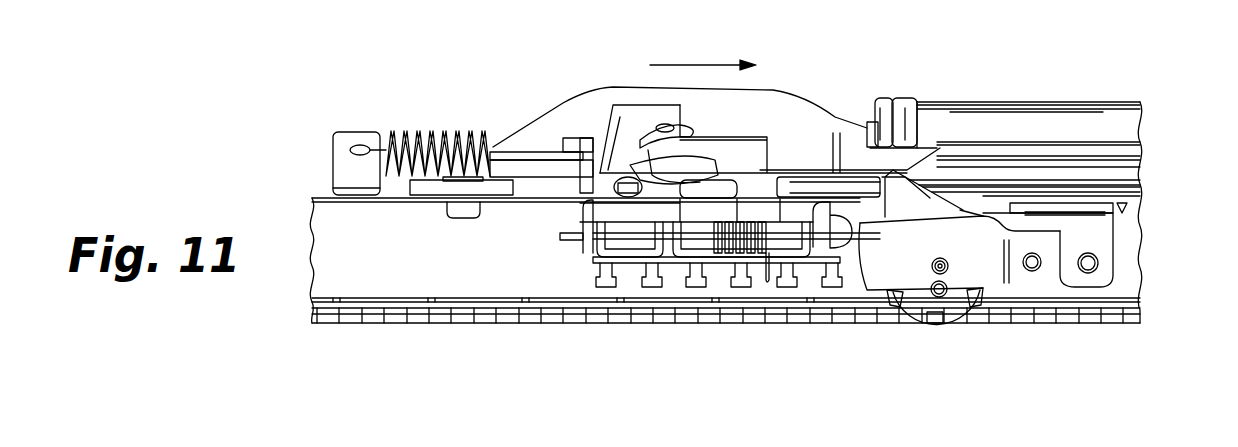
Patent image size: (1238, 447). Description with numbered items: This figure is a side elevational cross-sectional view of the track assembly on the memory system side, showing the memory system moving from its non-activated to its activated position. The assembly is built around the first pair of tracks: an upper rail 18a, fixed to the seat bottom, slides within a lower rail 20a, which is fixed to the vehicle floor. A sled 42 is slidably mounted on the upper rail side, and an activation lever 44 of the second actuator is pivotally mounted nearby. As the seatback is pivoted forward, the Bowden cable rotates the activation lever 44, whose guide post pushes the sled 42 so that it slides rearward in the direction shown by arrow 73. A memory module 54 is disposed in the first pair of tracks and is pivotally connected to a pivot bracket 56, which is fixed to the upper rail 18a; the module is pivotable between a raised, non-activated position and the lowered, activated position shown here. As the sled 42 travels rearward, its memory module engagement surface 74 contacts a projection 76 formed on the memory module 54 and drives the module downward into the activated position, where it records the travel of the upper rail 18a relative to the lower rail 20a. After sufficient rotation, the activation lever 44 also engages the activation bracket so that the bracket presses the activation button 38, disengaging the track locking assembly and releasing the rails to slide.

The arrow 73 is at (698, 63).
The sled 42 is at (543, 105).
The activation lever 44 is at (660, 187).
The activation button 38 is at (737, 178).
The memory module engagement surface 74 is at (943, 150).
The projection 76 is at (950, 187).
The upper rail 18a is at (1120, 193).
The pivot bracket 56 is at (1117, 210).
The memory module 54 is at (987, 257).
The lower rail 20a is at (907, 318).